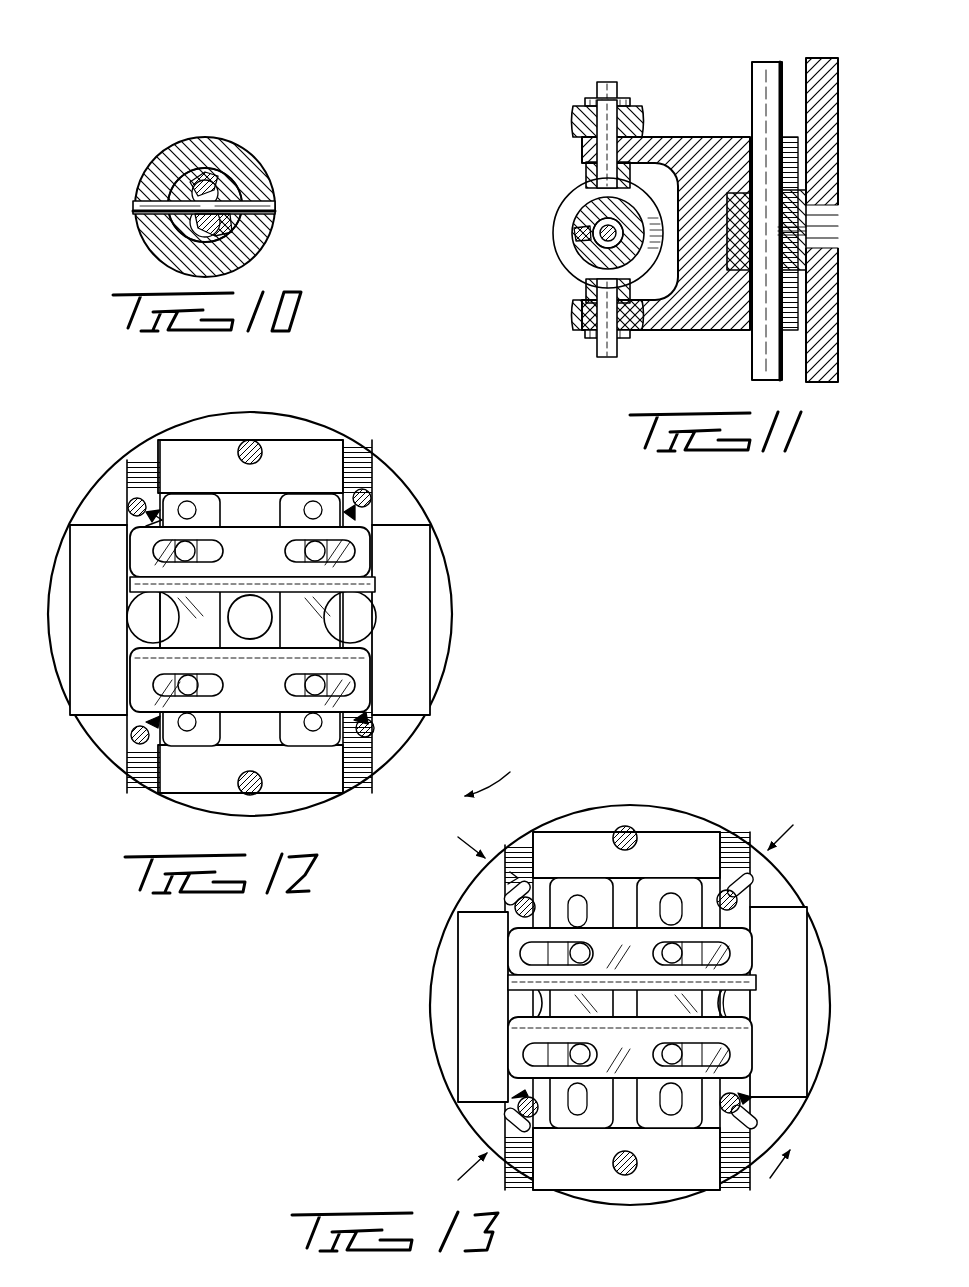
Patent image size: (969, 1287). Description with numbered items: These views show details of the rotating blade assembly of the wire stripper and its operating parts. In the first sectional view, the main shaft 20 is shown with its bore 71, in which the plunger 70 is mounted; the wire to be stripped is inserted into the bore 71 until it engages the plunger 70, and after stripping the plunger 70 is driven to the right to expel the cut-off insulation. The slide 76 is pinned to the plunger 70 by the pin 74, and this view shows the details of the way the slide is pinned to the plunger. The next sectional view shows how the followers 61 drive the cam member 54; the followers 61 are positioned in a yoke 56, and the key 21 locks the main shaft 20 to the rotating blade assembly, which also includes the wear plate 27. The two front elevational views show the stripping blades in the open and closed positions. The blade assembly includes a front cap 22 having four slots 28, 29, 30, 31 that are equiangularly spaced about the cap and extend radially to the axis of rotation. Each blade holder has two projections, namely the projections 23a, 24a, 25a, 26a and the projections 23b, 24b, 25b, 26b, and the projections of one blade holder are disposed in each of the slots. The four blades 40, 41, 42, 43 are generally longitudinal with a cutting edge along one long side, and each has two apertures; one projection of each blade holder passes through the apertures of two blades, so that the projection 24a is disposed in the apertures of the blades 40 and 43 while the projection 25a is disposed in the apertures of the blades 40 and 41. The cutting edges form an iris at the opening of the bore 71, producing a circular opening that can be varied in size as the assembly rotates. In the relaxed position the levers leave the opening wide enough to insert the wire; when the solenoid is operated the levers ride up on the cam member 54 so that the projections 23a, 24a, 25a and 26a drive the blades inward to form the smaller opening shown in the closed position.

In FIG. 10, the main shaft 20 is at (193, 233).
In FIG. 11, the main shaft 20 is at (593, 228).
In FIG. 11, the key 21 is at (579, 240).
In FIG. 12, the front cap 22 is at (318, 800).
In FIG. 13, the front cap 22 is at (642, 1205).
In FIG. 12, the projection 23a is at (190, 690).
In FIG. 13, the projection 23a is at (580, 1055).
In FIG. 12, the projection 23b is at (160, 730).
In FIG. 13, the projection 23b is at (530, 1105).
In FIG. 12, the projection 24a is at (185, 550).
In FIG. 13, the projection 24a is at (580, 955).
In FIG. 12, the projection 24b is at (128, 508).
In FIG. 13, the projection 24b is at (532, 905).
In FIG. 12, the projection 25a is at (318, 550).
In FIG. 13, the projection 25a is at (675, 953).
In FIG. 12, the projection 25b is at (372, 497).
In FIG. 13, the projection 25b is at (740, 895).
In FIG. 12, the projection 26a is at (312, 688).
In FIG. 13, the projection 26a is at (675, 1053).
In FIG. 12, the projection 26b is at (418, 737).
In FIG. 13, the projection 26b is at (732, 1100).
In FIG. 11, the wear plate 27 is at (772, 62).
In FIG. 12, the slot 28 is at (135, 723).
In FIG. 13, the slot 28 is at (522, 1125).
In FIG. 12, the slot 29 is at (370, 710).
In FIG. 13, the slot 29 is at (755, 1110).
In FIG. 12, the slot 30 is at (375, 528).
In FIG. 13, the slot 30 is at (735, 915).
In FIG. 12, the slot 31 is at (150, 525).
In FIG. 13, the slot 31 is at (510, 900).
In FIG. 12, the blade 40 is at (268, 548).
In FIG. 13, the blade 40 is at (640, 898).
In FIG. 12, the blade 41 is at (305, 617).
In FIG. 13, the blade 41 is at (705, 1005).
In FIG. 12, the blade 42 is at (258, 695).
In FIG. 13, the blade 42 is at (645, 1080).
In FIG. 12, the blade 43 is at (185, 607).
In FIG. 13, the blade 43 is at (600, 910).
In FIG. 11, the cam member 54 is at (573, 262).
In FIG. 11, the yoke 56 is at (698, 150).
In FIG. 11, the follower 61 is at (593, 173).
In FIG. 10, the plunger 70 is at (212, 196).
In FIG. 11, the plunger 70 is at (598, 233).
In FIG. 10, the bore 71 is at (265, 238).
In FIG. 11, the bore 71 is at (615, 250).
In FIG. 10, the pin 74 is at (273, 210).
In FIG. 10, the slide 76 is at (262, 188).